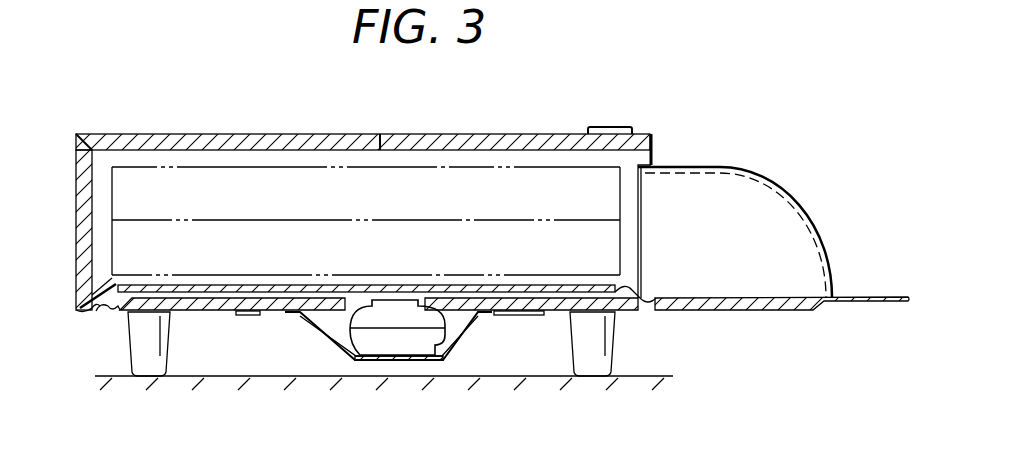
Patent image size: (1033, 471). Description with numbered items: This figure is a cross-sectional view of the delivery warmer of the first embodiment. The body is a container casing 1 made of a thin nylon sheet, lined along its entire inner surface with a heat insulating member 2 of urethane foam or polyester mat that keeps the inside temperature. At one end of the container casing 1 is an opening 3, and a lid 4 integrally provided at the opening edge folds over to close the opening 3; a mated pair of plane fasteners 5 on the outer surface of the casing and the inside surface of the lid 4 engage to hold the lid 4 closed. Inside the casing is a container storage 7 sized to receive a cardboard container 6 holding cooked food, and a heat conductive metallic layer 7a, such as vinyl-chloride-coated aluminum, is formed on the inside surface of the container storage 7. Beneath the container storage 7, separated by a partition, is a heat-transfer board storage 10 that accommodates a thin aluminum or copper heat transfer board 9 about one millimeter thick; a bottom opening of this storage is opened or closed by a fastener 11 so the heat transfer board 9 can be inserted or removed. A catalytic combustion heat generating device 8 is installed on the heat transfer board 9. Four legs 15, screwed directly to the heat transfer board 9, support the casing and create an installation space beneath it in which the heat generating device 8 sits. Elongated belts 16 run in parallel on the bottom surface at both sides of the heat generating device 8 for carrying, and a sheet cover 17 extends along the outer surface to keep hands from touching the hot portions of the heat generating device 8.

The container casing 1 is at (305, 133).
The heat insulating member 2 is at (203, 133).
The opening 3 is at (650, 157).
The lid 4 is at (792, 305).
The plane fasteners 5 is at (608, 127).
The container 6 is at (470, 178).
The container storage 7 is at (440, 152).
The heat conductive metallic layer 7a is at (385, 156).
The catalytic combustion heat generating device 8 is at (400, 340).
The heat transfer board 9 is at (108, 290).
The heat-transfer board storage 10 is at (74, 300).
The fastener 11 is at (88, 316).
The legs 15 is at (605, 349).
The belts 16 is at (510, 320).
The sheet cover 17 is at (360, 362).